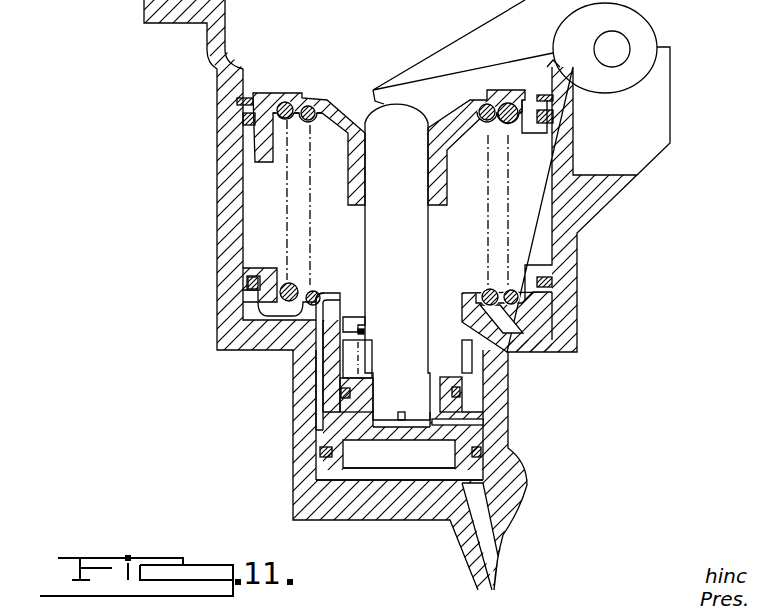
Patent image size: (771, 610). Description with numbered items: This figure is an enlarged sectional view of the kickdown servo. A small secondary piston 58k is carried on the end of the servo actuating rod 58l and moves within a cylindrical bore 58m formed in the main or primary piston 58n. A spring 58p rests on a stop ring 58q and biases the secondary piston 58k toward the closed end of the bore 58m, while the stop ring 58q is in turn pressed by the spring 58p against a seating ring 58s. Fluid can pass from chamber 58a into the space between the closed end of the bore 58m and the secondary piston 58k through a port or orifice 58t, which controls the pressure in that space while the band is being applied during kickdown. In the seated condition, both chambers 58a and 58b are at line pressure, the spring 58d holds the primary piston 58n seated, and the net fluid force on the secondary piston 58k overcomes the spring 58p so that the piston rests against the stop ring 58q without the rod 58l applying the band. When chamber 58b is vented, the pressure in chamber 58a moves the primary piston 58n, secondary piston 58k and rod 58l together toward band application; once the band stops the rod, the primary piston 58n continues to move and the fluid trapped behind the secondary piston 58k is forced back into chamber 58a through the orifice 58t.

The chamber 58b is at (250, 168).
The chamber 58a is at (247, 307).
The servo actuating rod 58l is at (390, 135).
The stop ring 58q is at (360, 320).
The seating ring 58s is at (352, 318).
The spring 58d is at (553, 233).
The spring 58p is at (440, 364).
The cylindrical bore 58m is at (323, 369).
The primary piston 58n is at (340, 410).
The secondary piston 58k is at (445, 446).
The orifice 58t is at (487, 432).